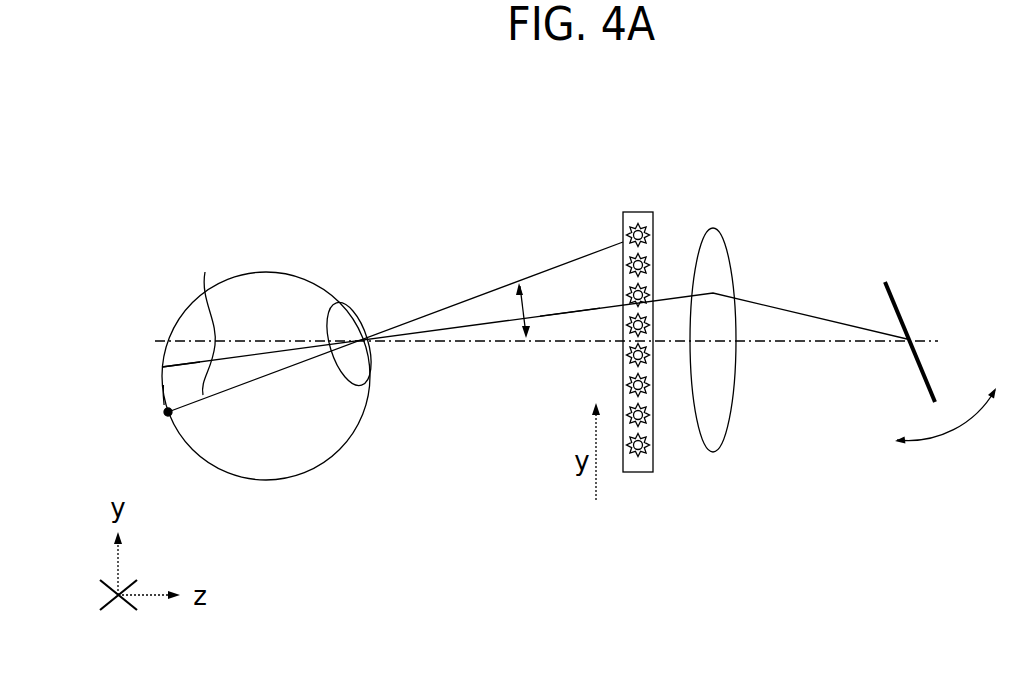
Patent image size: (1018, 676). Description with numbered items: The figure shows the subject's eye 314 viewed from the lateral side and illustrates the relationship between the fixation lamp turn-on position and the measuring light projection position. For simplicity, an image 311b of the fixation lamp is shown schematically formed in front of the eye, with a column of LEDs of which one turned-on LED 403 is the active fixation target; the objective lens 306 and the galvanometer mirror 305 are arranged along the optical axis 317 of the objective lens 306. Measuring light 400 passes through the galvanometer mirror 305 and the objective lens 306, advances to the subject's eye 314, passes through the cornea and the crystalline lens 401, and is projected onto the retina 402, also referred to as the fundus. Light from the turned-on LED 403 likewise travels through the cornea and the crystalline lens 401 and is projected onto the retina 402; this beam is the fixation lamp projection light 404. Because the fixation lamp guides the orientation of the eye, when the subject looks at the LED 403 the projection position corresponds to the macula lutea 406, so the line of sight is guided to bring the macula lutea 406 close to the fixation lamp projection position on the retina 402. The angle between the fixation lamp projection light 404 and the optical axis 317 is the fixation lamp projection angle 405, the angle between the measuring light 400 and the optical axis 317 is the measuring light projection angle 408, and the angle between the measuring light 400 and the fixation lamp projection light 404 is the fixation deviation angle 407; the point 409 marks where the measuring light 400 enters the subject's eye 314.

The galvanometer mirror 305 is at (906, 313).
The objective lens 306 is at (713, 452).
The image of the fixation lamp 311b is at (640, 472).
The subject's eye 314 is at (248, 486).
The optical axis 317 is at (838, 344).
The measuring light 400 is at (475, 325).
The crystalline lens 401 is at (353, 320).
The retina 402 is at (163, 395).
The LED 403 is at (638, 224).
The fixation lamp projection light 404 is at (447, 307).
The fixation lamp projection angle 405 is at (522, 284).
The macula lutea 406 is at (165, 415).
The fixation deviation angle 407 is at (207, 317).
The measuring light projection angle 408 is at (563, 313).
The incident point on eyeball 409 is at (162, 367).